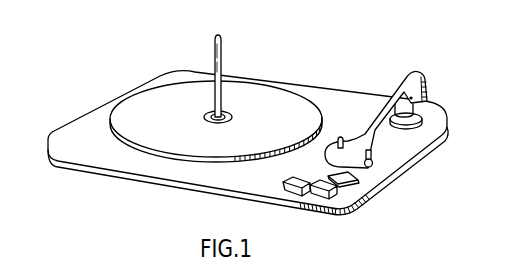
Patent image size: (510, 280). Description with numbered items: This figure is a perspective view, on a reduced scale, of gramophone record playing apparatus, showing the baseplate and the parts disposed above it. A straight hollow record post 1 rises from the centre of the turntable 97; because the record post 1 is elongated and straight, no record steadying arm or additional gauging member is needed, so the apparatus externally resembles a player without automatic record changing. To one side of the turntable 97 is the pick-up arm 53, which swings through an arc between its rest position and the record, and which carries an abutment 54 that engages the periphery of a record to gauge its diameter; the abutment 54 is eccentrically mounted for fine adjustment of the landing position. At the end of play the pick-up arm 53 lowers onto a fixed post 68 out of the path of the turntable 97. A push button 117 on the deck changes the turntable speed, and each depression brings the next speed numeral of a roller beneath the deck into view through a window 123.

The record post 1 is at (221, 78).
The turntable 97 is at (278, 100).
The pick-up arm 53 is at (393, 92).
The abutment 54 is at (342, 139).
The fixed post 68 is at (372, 158).
The push button 117 is at (292, 189).
The window 123 is at (356, 181).